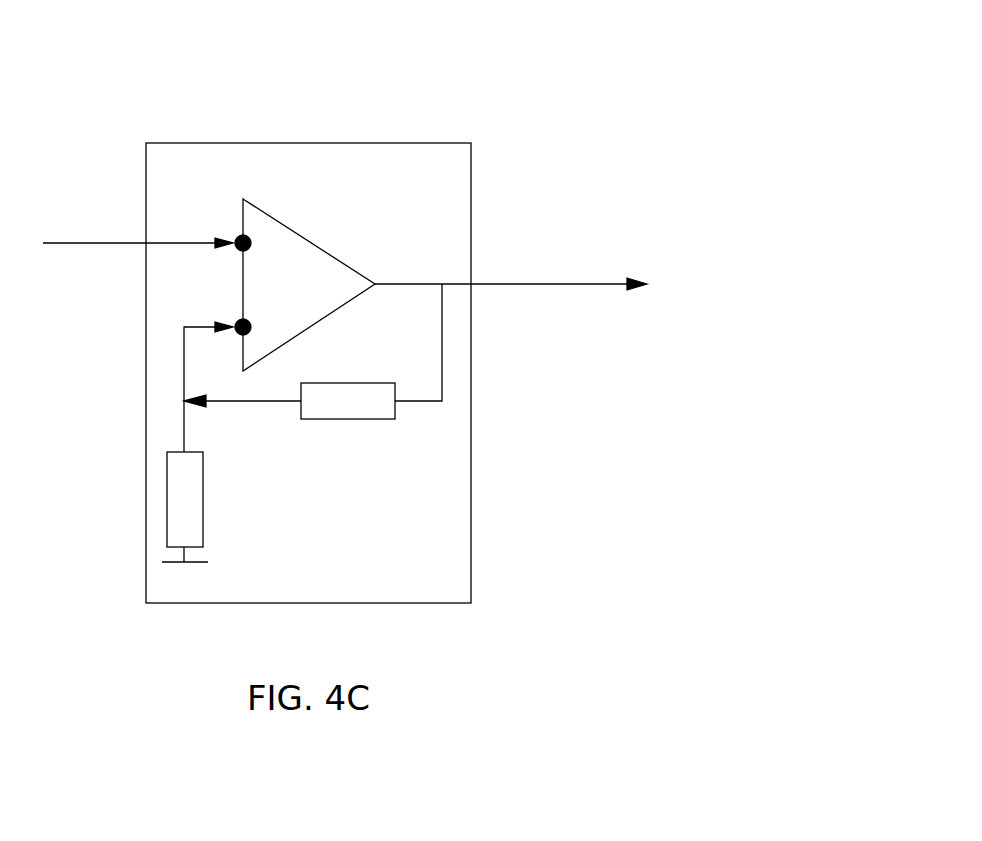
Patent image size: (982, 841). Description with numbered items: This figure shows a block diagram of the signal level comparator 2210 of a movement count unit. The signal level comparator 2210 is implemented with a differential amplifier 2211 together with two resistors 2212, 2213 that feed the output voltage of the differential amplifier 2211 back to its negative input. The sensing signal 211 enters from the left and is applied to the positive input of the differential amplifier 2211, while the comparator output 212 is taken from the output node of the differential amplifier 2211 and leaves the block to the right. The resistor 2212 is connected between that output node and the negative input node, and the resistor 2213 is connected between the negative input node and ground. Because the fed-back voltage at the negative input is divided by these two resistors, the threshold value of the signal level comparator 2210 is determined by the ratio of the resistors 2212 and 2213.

The signal level comparator 2210 is at (448, 75).
The sensing signal 211 is at (181, 240).
The differential amplifier 2211 is at (310, 242).
The output signal 212 is at (508, 282).
The resistor 2212 is at (349, 420).
The resistor 2213 is at (203, 497).